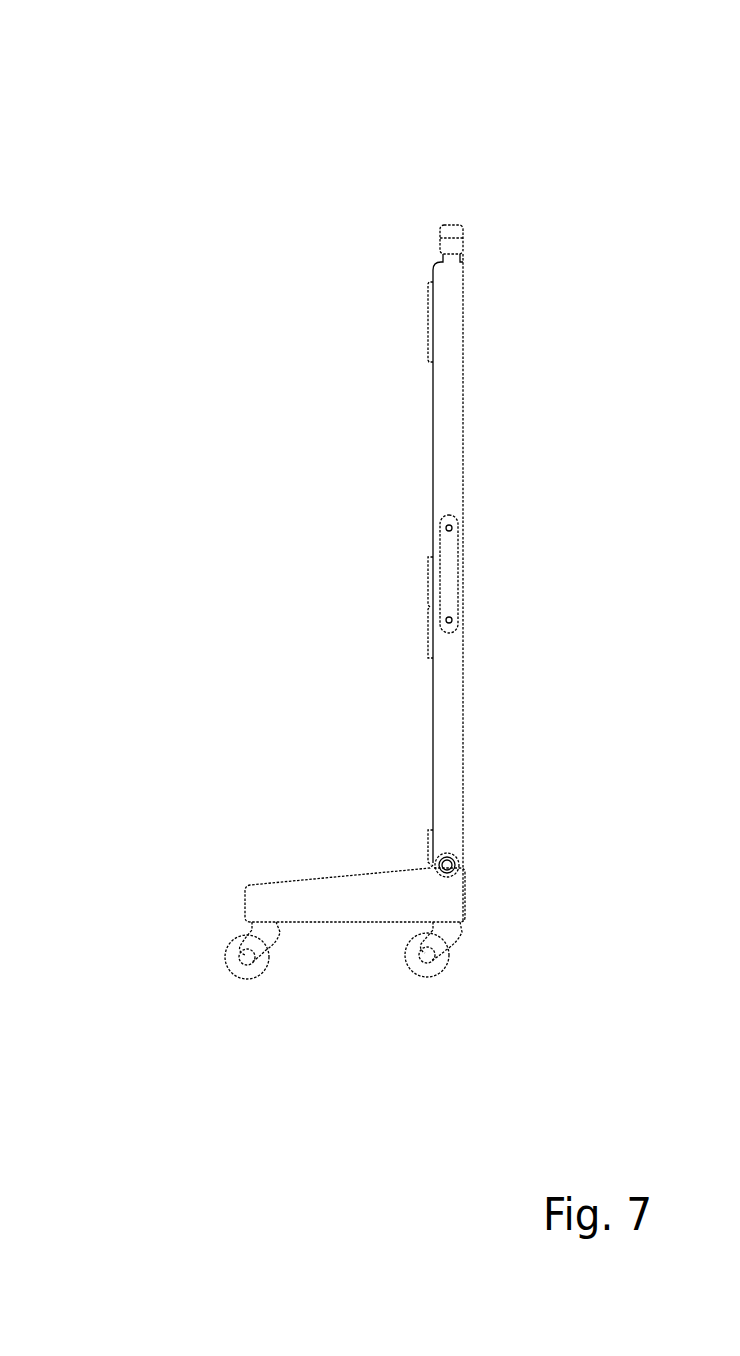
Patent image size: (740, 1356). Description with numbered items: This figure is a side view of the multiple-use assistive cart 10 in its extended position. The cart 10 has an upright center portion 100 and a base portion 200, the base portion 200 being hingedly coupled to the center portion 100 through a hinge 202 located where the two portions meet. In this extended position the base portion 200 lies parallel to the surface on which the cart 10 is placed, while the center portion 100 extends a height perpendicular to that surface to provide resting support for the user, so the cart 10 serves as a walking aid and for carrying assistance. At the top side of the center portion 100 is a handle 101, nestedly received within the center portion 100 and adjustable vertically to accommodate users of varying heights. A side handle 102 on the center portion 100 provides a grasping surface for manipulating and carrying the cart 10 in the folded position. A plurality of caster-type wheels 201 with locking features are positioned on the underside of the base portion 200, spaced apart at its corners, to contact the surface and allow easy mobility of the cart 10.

The cart 10 is at (207, 172).
The center portion 100 is at (455, 355).
The handle 101 is at (448, 232).
The side handle 102 is at (450, 570).
The base portion 200 is at (352, 886).
The wheels 201 is at (228, 966).
The hinge 202 is at (460, 868).